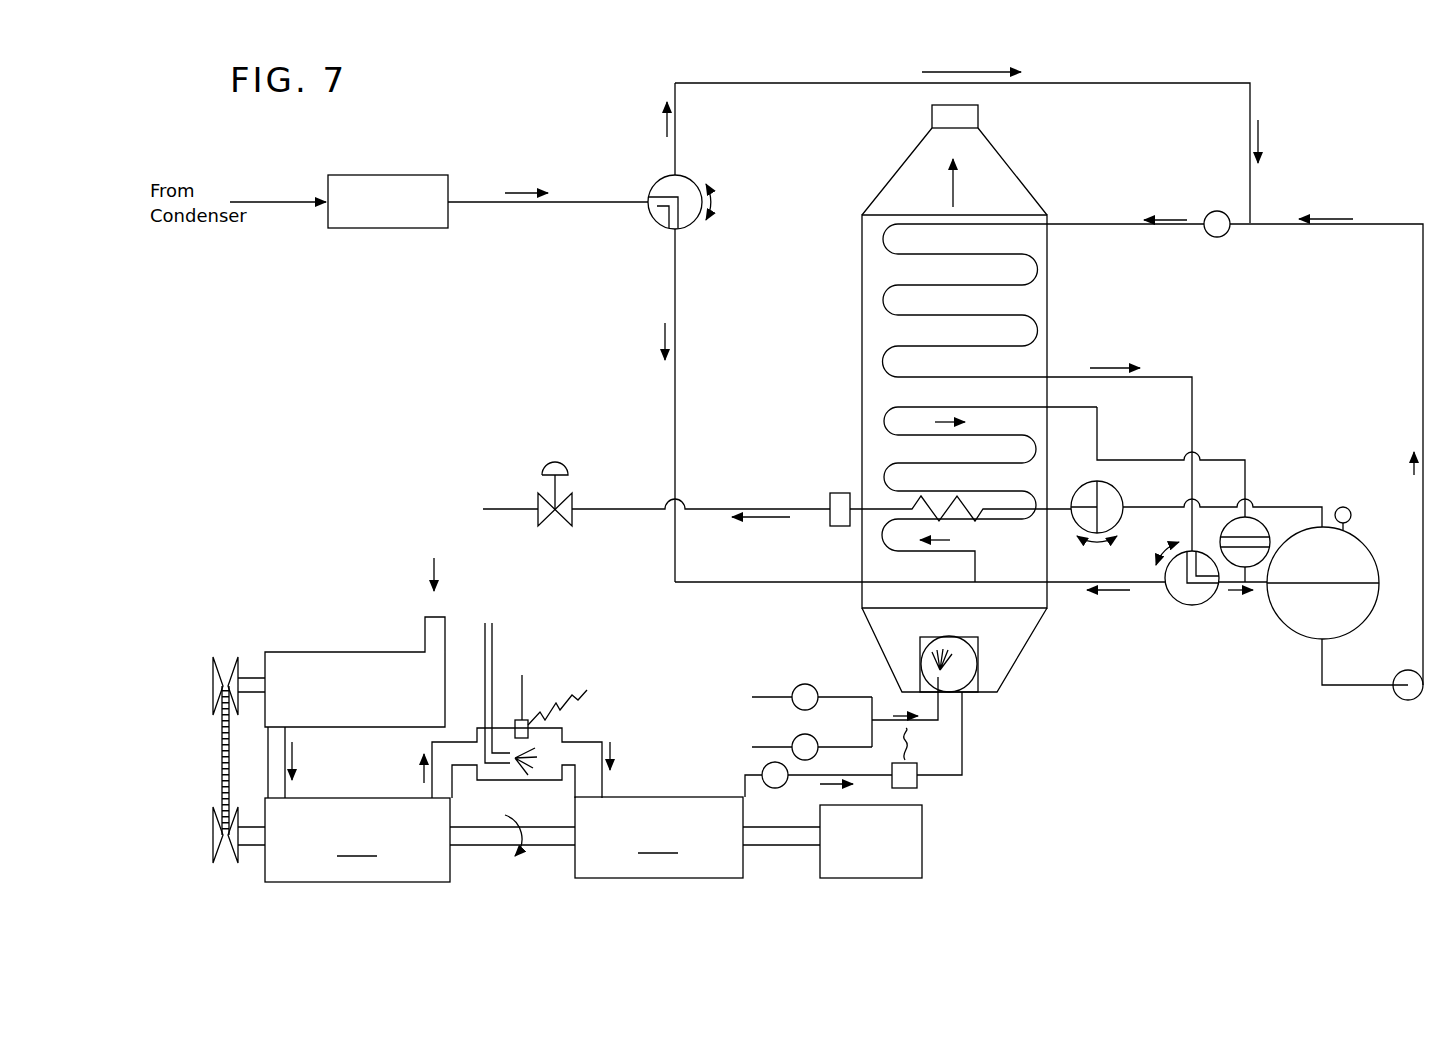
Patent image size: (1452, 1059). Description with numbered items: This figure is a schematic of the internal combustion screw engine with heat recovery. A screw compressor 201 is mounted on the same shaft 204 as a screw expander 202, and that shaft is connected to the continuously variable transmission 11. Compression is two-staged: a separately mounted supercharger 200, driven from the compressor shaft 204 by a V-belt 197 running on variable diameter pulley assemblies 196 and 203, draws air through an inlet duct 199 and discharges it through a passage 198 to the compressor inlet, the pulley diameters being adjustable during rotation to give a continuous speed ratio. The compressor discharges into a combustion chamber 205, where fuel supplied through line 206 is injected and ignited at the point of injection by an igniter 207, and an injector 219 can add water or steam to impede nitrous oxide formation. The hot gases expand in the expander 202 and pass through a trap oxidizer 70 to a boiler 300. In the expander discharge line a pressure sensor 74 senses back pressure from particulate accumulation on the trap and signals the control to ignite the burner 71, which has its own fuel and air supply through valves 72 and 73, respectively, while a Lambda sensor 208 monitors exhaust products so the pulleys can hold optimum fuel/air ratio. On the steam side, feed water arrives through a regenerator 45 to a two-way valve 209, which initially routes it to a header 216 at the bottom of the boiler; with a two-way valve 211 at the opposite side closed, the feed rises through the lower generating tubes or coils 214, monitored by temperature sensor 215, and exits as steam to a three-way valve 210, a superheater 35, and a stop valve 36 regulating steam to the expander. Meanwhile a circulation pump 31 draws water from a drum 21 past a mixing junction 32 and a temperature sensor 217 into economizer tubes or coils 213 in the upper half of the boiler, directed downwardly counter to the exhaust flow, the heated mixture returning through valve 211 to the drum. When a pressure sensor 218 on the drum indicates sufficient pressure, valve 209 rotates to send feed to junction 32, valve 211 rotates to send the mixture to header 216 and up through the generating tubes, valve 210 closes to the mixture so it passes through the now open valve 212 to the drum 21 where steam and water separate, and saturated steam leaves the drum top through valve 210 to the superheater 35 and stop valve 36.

The regenerator 45 is at (445, 175).
The two-way valve 209 is at (662, 216).
The temperature sensor 217 is at (1217, 211).
The mixing junction 32 is at (1250, 228).
The economizer tubes or coils 213 is at (1037, 270).
The boiler 300 is at (1047, 332).
The generating tubes or coils 214 is at (875, 420).
The temperature sensor 215 is at (837, 493).
The superheater 35 is at (915, 512).
The three-way valve 210 is at (1121, 497).
The valve 212 is at (1263, 525).
The pressure sensor 218 is at (1352, 512).
The drum 21 is at (1372, 607).
The two-way valve 211 is at (1200, 605).
The header 216 is at (990, 595).
The circulation pump 31 is at (1398, 698).
The stop valve 36 is at (538, 505).
The inlet duct 199 is at (425, 632).
The supercharger 200 is at (340, 652).
The line 206 is at (492, 645).
The igniter 207 is at (522, 697).
The injector 219 is at (480, 737).
The combustion chamber 205 is at (553, 752).
The pulley assembly 203 is at (216, 675).
The V-belt 197 is at (220, 768).
The pulley assembly 196 is at (212, 840).
The shaft 204 is at (252, 838).
The passage 198 is at (290, 797).
The screw compressor 201 is at (357, 840).
The screw expander 202 is at (659, 837).
The valve 72 is at (792, 688).
The valve 73 is at (793, 740).
The pressure sensor 74 is at (762, 772).
The Lambda sensor 208 is at (917, 783).
The trap oxidizer 70 is at (981, 650).
The burner 71 is at (955, 668).
The continuously variable transmission 11 is at (922, 866).